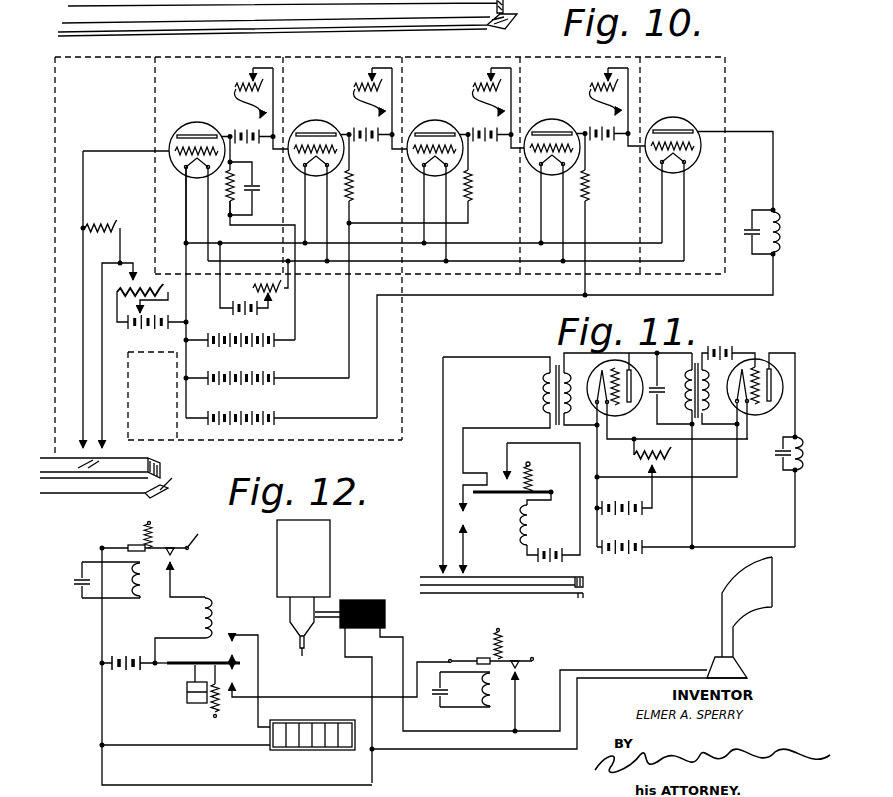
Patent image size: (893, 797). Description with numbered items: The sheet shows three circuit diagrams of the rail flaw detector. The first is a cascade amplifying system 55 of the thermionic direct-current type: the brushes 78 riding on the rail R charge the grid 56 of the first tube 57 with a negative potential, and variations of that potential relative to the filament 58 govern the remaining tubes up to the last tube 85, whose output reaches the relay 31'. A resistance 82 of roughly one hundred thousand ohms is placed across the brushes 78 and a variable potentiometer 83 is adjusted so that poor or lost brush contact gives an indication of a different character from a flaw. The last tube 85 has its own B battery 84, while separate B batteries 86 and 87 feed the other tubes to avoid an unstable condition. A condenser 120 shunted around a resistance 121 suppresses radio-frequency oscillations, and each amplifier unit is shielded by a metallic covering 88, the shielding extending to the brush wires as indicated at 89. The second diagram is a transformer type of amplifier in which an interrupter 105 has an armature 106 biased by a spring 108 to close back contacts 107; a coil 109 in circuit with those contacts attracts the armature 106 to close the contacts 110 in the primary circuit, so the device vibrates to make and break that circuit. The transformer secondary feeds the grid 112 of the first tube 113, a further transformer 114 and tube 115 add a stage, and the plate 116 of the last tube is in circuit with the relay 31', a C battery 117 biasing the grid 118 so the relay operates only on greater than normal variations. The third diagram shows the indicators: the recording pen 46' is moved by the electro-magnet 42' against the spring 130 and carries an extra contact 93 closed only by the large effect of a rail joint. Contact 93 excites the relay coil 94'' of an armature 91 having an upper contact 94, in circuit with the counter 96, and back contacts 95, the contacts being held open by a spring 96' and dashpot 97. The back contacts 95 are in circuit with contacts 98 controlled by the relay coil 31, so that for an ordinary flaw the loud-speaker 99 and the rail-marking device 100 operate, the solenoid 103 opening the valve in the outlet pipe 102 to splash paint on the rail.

In FIG. 10, the metallic covering 89 is at (105, 256).
In FIG. 10, the metallic coverings 88 is at (426, 248).
In FIG. 10, the first tube 57 is at (197, 139).
In FIG. 10, the grid 56 is at (180, 152).
In FIG. 10, the filament 58 is at (174, 163).
In FIG. 10, the condenser 120 is at (261, 188).
In FIG. 10, the resistance 121 is at (225, 188).
In FIG. 10, the resistance 82 is at (102, 299).
In FIG. 10, the variable potentiometer 83 is at (144, 355).
In FIG. 10, the B battery 84 is at (244, 351).
In FIG. 10, the B battery 86 is at (267, 389).
In FIG. 10, the B battery 87 is at (281, 427).
In FIG. 10, the last tube 85 is at (673, 134).
In FIG. 10, the cascade amplifying system 55 is at (577, 257).
In FIG. 10, the relay 31' is at (780, 219).
In FIG. 11, the relay 31' is at (803, 491).
In FIG. 10, the brushes 78 is at (104, 479).
In FIG. 10, the rail R is at (174, 476).
In FIG. 11, the rail R is at (518, 590).
In FIG. 11, the contacts 110 is at (466, 518).
In FIG. 11, the grid 112 is at (605, 384).
In FIG. 11, the first tube 113 is at (641, 438).
In FIG. 11, the transformer 114 is at (695, 436).
In FIG. 11, the C battery 117 is at (731, 343).
In FIG. 11, the tube 115 is at (761, 370).
In FIG. 11, the plate 116 is at (772, 394).
In FIG. 11, the grid 118 is at (768, 426).
In FIG. 11, the back contacts 107 is at (504, 474).
In FIG. 11, the spring 108 is at (536, 452).
In FIG. 11, the interrupter 105 is at (512, 503).
In FIG. 11, the armature 106 is at (539, 490).
In FIG. 11, the coil 109 is at (552, 533).
In FIG. 12, the electro-magnet 42' is at (107, 580).
In FIG. 12, the spring 130 is at (144, 531).
In FIG. 12, the recording pen 46' is at (208, 529).
In FIG. 12, the extra contact 93 is at (190, 572).
In FIG. 12, the relay coil 94'' is at (177, 630).
In FIG. 12, the armature 91 is at (197, 653).
In FIG. 12, the dashpot 97 is at (187, 700).
In FIG. 12, the spring 96' is at (234, 698).
In FIG. 12, the upper contact 94 is at (251, 681).
In FIG. 12, the back contacts 95 is at (341, 679).
In FIG. 12, the contacts 98 is at (498, 680).
In FIG. 12, the oscillating circuit 31 is at (475, 690).
In FIG. 12, the rail-marking device 100 is at (330, 563).
In FIG. 12, the outlet pipe 102 is at (310, 642).
In FIG. 12, the electro-magnet 103 is at (360, 603).
In FIG. 12, the loud-speaker 99 is at (739, 617).
In FIG. 12, the counter 96 is at (228, 750).